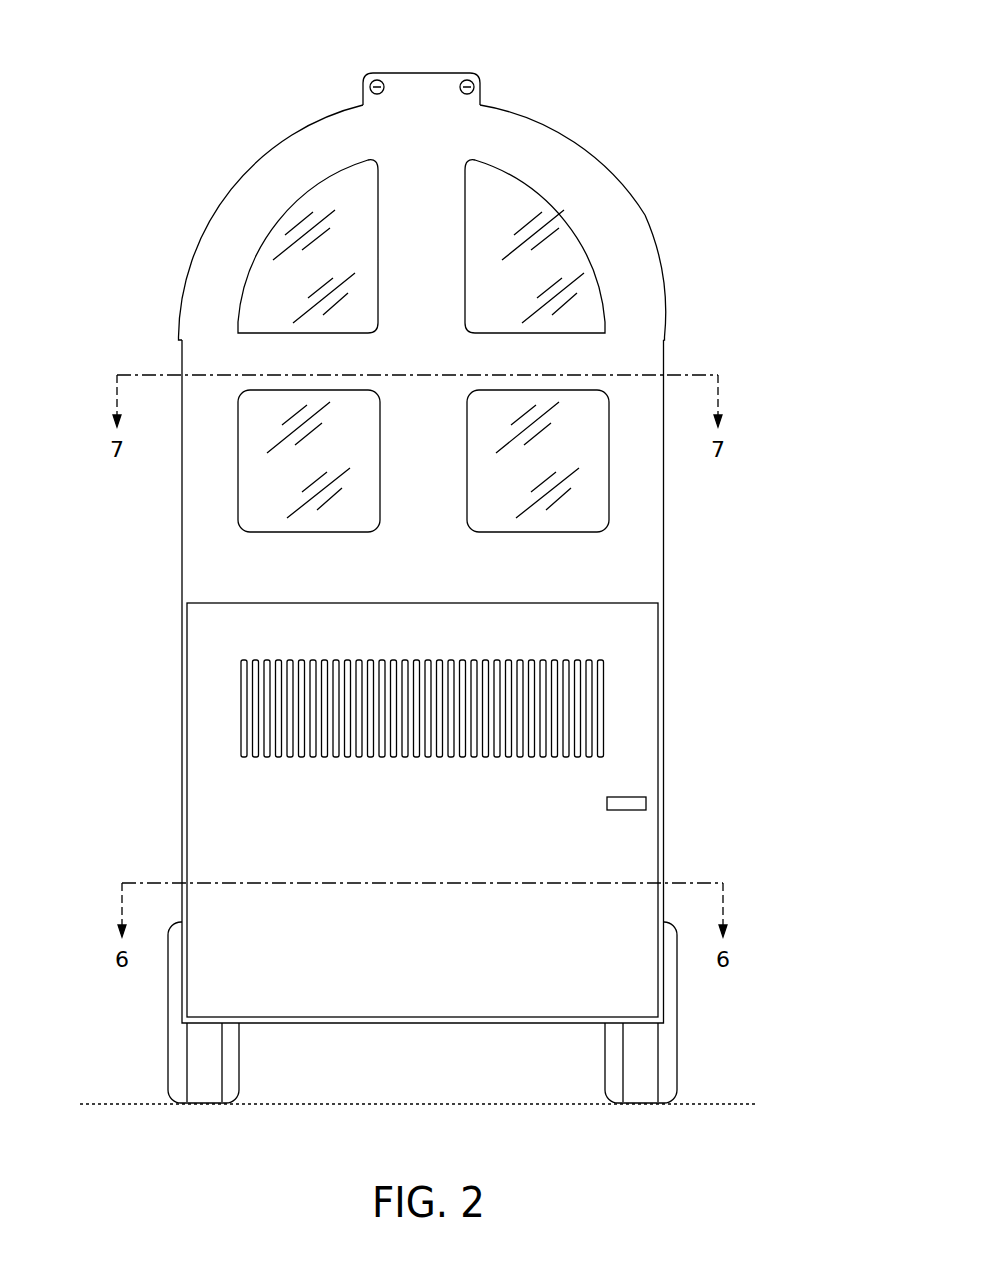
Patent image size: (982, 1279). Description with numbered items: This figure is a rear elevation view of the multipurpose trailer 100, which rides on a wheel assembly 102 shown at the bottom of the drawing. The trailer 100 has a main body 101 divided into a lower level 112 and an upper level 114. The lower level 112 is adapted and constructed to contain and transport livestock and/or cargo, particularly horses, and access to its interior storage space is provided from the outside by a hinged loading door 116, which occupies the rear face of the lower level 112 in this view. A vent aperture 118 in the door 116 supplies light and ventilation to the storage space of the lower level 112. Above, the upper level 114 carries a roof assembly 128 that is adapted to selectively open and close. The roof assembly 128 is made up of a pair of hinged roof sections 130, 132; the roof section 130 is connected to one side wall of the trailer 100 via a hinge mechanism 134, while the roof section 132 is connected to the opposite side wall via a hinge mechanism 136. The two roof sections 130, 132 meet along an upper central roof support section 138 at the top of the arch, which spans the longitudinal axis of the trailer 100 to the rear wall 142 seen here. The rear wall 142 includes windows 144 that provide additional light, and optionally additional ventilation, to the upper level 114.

The multipurpose trailer 100 is at (135, 57).
The main body 101 is at (118, 517).
The wheel assembly 102 is at (678, 1060).
The lower level 112 is at (683, 765).
The upper level 114 is at (683, 566).
The loading door 116 is at (208, 778).
The vent aperture 118 is at (240, 708).
The roof assembly 128 is at (635, 184).
The roof section 130 is at (558, 132).
The roof section 132 is at (293, 128).
The hinge mechanism 134 is at (670, 340).
The hinge mechanism 136 is at (178, 340).
The upper central roof support section 138 is at (422, 73).
The rear wall 142 is at (633, 295).
The windows 144 is at (265, 287).